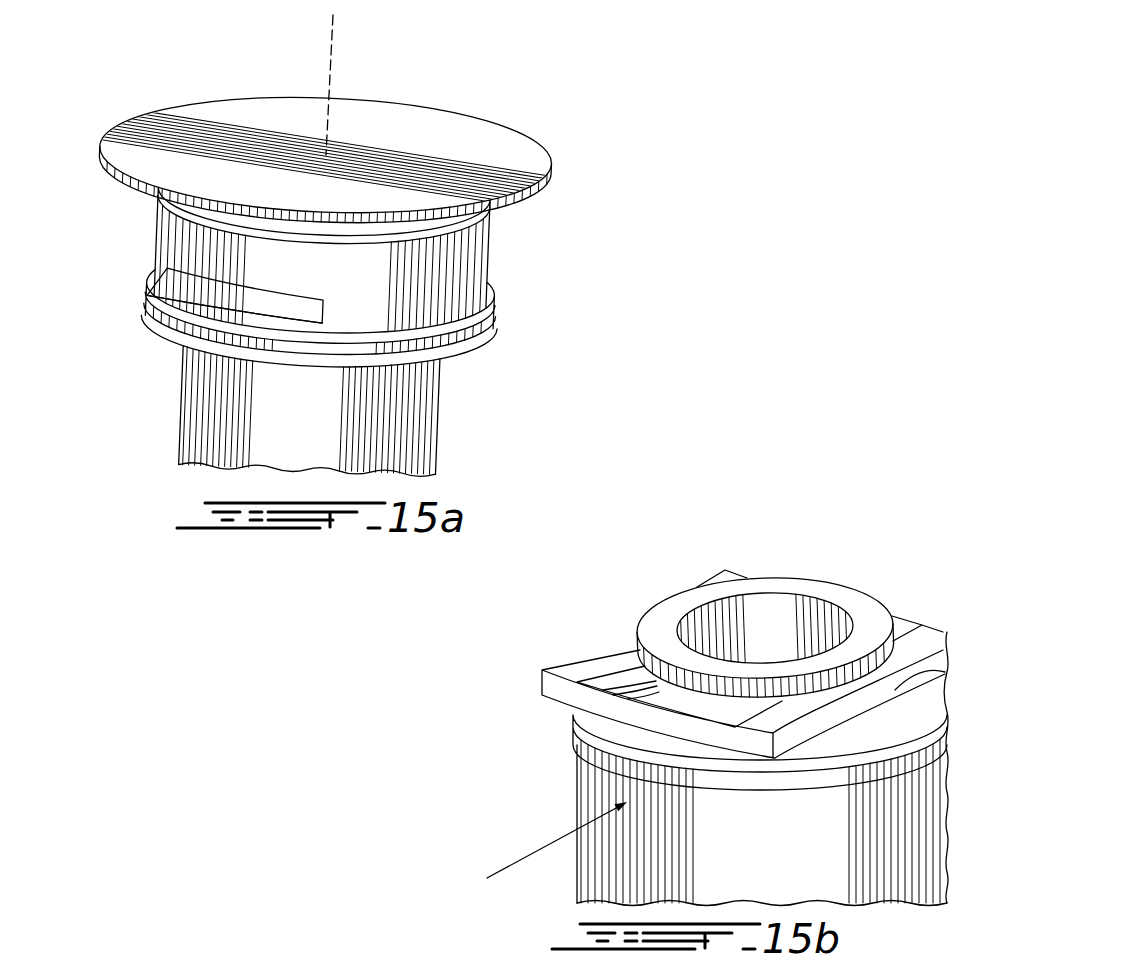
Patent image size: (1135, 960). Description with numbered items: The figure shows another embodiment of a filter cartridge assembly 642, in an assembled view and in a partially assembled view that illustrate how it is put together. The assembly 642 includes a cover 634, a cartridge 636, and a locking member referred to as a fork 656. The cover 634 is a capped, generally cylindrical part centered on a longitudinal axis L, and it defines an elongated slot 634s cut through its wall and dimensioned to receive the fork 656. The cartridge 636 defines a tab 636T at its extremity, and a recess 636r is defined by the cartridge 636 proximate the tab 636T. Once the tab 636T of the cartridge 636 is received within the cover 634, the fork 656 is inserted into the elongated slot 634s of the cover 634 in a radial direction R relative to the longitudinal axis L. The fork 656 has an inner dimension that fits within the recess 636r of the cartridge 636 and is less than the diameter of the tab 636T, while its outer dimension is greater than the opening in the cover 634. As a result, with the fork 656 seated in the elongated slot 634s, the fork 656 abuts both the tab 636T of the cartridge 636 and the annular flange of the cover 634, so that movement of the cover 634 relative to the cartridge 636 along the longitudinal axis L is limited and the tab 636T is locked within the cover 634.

In FIG. 15A, the cartridge assembly 642 is at (389, 293).
In FIG. 15B, the cartridge assembly 642 is at (684, 636).
In FIG. 15A, the cover 634 is at (152, 221).
In FIG. 15A, the elongated slot 634s is at (270, 315).
In FIG. 15A, the cartridge 636 is at (168, 390).
In FIG. 15B, the cartridge 636 is at (764, 577).
In FIG. 15B, the tab 636T is at (675, 612).
In FIG. 15B, the recess 636r is at (668, 694).
In FIG. 15A, the fork 656 is at (172, 283).
In FIG. 15B, the fork 656 is at (560, 641).
In FIG. 15A, the longitudinal axis L is at (331, 68).
In FIG. 15B, the radial direction R is at (538, 851).